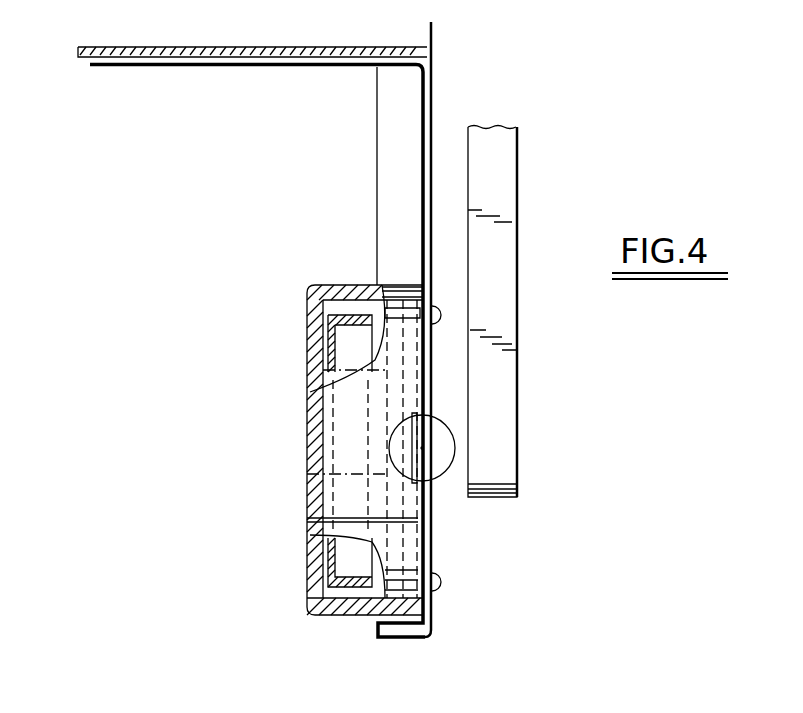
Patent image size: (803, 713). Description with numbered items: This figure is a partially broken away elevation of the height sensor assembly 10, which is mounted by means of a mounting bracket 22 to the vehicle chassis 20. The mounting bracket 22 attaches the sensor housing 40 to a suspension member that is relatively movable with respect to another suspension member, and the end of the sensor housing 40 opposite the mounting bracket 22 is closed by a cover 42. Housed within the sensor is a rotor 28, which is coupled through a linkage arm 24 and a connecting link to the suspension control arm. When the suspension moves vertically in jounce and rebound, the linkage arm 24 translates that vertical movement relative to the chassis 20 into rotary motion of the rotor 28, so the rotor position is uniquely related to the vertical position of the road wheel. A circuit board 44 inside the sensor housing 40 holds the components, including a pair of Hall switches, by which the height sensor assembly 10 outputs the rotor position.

The height sensor assembly 10 is at (292, 284).
The vehicle chassis 20 is at (303, 52).
The mounting bracket 22 is at (348, 146).
The linkage arm 24 is at (517, 224).
The rotor 28 is at (345, 366).
The sensor housing 40 is at (340, 617).
The cover 42 is at (308, 345).
The circuit board 44 is at (405, 350).